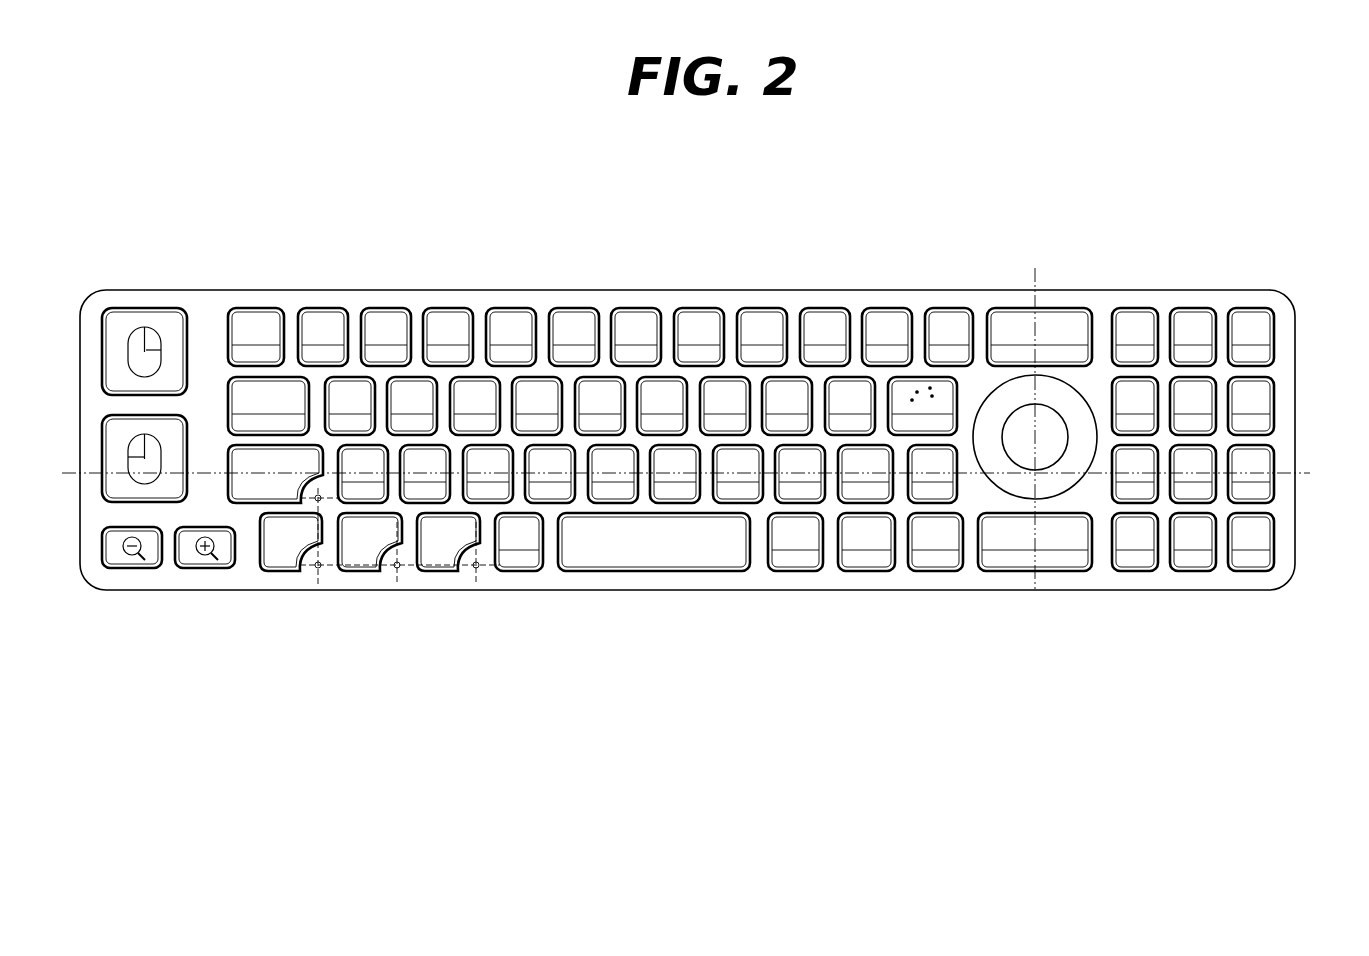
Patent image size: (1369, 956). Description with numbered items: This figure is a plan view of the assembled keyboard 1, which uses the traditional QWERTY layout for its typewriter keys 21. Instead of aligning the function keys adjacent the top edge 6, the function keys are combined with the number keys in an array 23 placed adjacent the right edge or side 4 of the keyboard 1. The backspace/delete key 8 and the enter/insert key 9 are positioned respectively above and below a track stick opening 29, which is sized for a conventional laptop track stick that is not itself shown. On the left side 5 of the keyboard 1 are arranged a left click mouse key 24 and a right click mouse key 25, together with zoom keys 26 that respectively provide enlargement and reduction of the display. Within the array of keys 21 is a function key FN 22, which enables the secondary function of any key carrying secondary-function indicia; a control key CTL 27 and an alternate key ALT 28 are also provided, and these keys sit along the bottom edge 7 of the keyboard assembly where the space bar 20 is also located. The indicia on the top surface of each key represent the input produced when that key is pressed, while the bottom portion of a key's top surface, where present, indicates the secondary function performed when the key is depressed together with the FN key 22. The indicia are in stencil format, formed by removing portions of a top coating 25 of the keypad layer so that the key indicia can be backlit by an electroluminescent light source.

The keyboard 1 is at (696, 454).
The right edge 4 is at (69, 518).
The left side 5 is at (84, 386).
The top edge 6 is at (926, 288).
The bottom edge 7 is at (785, 595).
The backspace/delete key 8 is at (1072, 328).
The enter/insert key 9 is at (1075, 558).
The space bar 20 is at (637, 555).
The typewriter keys 21 is at (867, 283).
The function key FN 22 is at (277, 570).
The array of function and number keys 23 is at (1277, 270).
The left click mouse key 24 is at (167, 308).
The right click mouse key 25 is at (103, 497).
The zoom keys 26 is at (237, 570).
The control key CTL 27 is at (365, 570).
The alternate key ALT 28 is at (442, 568).
The track stick opening 29 is at (1018, 436).